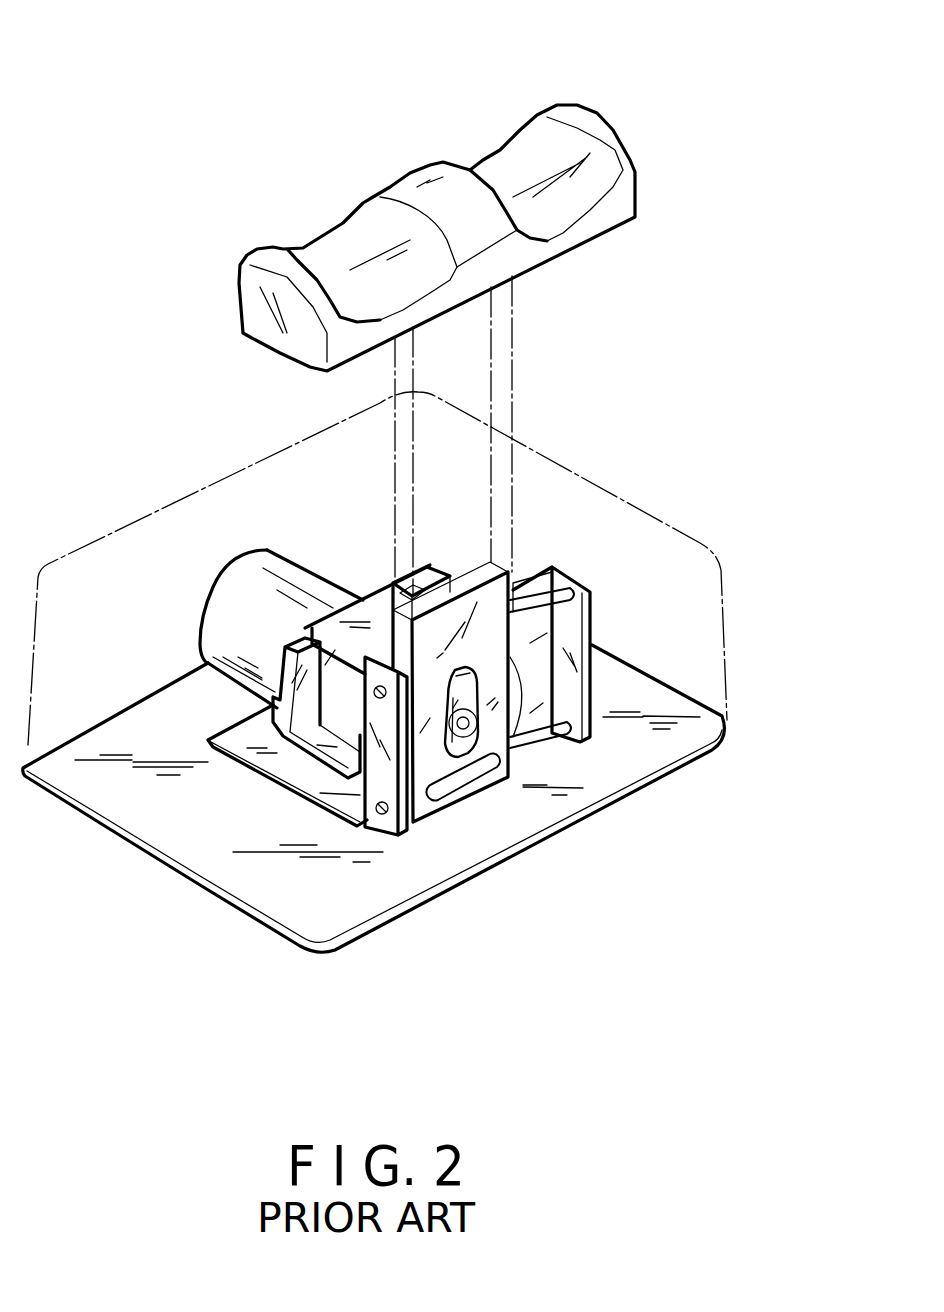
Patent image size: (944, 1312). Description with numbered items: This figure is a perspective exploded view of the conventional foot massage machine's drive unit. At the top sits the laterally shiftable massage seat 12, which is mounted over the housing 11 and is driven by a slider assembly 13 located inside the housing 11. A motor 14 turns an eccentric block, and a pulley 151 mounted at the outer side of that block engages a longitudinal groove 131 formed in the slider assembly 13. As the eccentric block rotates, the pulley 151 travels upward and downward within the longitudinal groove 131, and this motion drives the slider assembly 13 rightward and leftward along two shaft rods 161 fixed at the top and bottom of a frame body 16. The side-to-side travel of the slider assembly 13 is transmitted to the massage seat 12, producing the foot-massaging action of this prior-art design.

The housing 11 is at (588, 532).
The massage seat 12 is at (578, 153).
The slider assembly 13 is at (495, 723).
The longitudinal groove 131 is at (463, 752).
The motor 14 is at (252, 598).
The pulley 151 is at (435, 733).
The frame body 16 is at (592, 675).
The shaft rods 161 is at (565, 732).